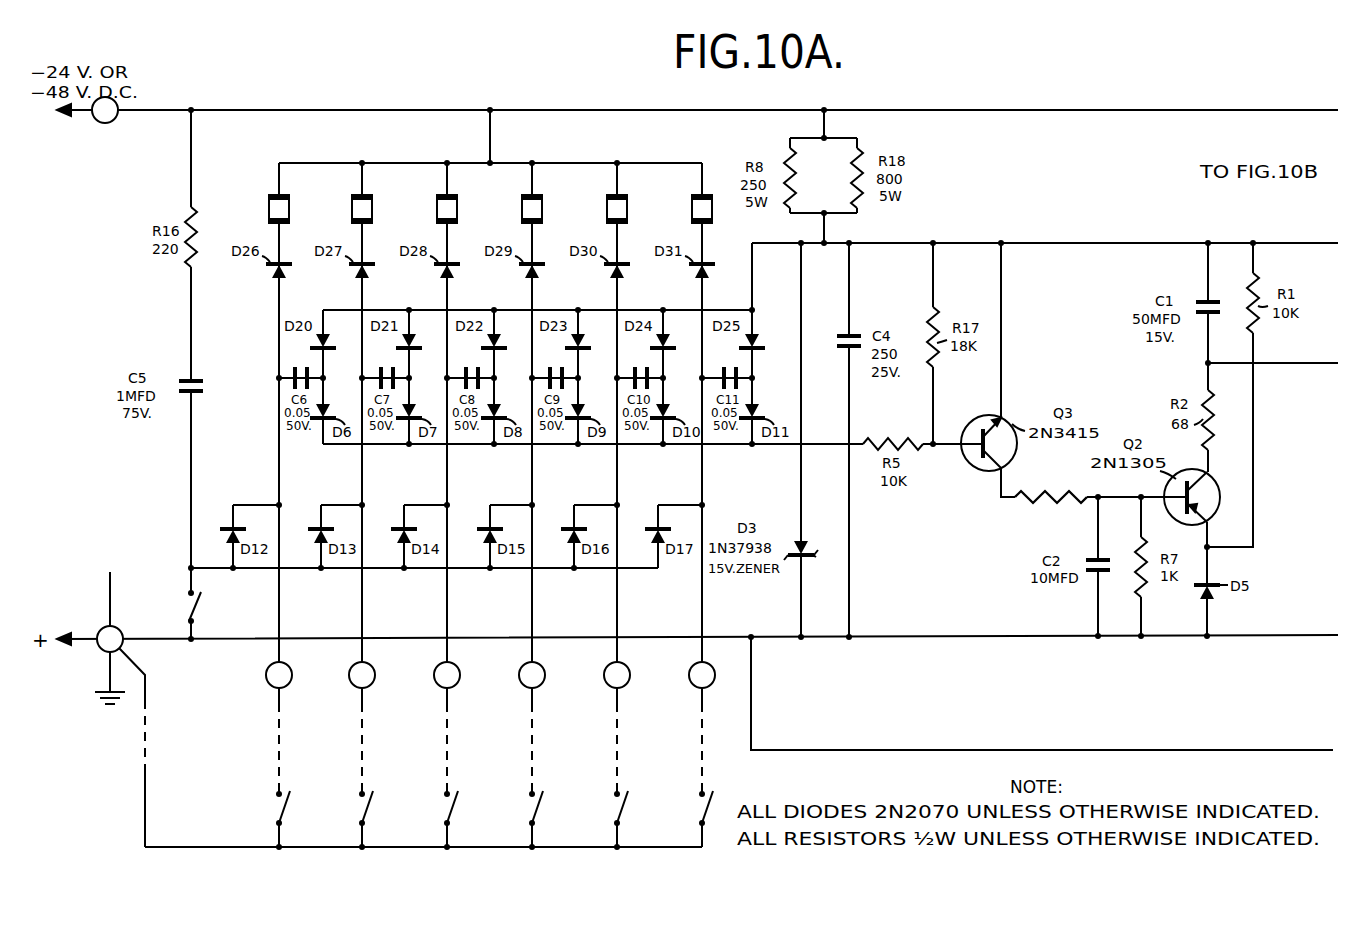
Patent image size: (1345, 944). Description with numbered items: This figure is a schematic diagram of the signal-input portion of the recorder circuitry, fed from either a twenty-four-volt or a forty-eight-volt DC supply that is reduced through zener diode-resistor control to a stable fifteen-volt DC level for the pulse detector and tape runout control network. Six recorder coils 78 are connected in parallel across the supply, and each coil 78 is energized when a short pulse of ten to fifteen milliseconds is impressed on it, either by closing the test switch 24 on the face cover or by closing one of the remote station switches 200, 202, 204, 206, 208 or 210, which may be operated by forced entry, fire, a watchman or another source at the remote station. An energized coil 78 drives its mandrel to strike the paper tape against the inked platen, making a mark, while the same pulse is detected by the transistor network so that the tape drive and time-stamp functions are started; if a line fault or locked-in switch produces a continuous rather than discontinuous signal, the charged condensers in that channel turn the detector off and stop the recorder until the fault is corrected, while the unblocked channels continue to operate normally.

The recorder coil 78 is at (477, 209).
The test switch 24 is at (199, 605).
The remote station switch 200 is at (281, 808).
The remote station switch 202 is at (364, 808).
The remote station switch 204 is at (449, 808).
The remote station switch 206 is at (534, 808).
The remote station switch 208 is at (619, 808).
The remote station switch 210 is at (704, 808).